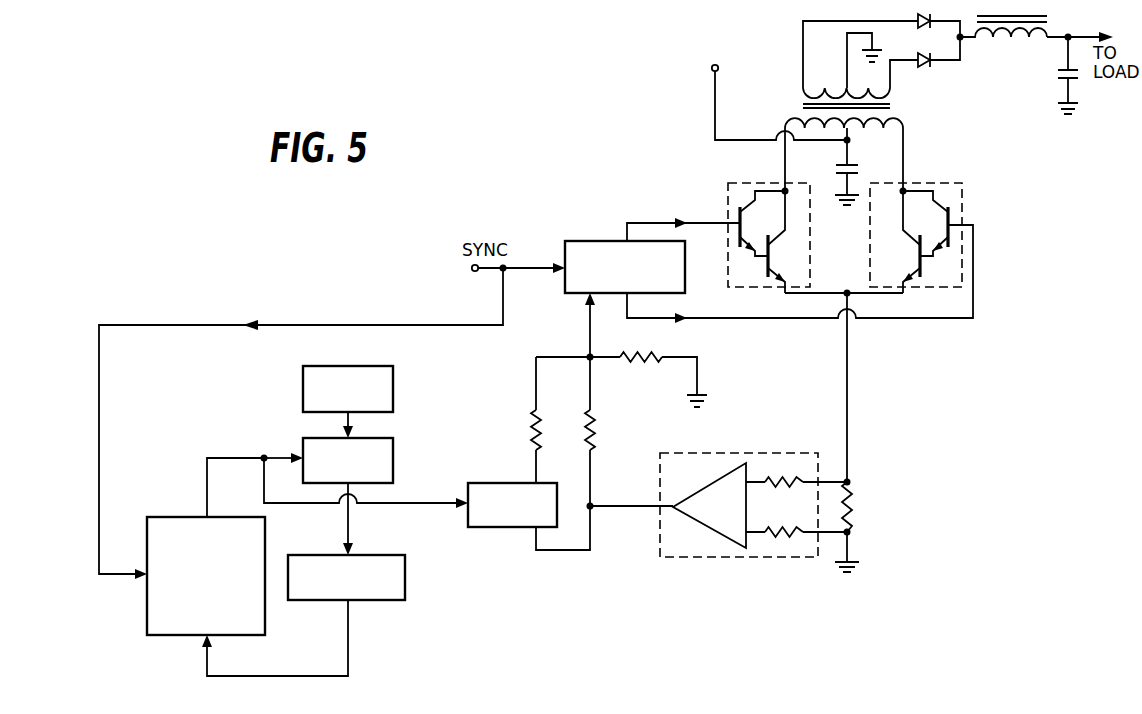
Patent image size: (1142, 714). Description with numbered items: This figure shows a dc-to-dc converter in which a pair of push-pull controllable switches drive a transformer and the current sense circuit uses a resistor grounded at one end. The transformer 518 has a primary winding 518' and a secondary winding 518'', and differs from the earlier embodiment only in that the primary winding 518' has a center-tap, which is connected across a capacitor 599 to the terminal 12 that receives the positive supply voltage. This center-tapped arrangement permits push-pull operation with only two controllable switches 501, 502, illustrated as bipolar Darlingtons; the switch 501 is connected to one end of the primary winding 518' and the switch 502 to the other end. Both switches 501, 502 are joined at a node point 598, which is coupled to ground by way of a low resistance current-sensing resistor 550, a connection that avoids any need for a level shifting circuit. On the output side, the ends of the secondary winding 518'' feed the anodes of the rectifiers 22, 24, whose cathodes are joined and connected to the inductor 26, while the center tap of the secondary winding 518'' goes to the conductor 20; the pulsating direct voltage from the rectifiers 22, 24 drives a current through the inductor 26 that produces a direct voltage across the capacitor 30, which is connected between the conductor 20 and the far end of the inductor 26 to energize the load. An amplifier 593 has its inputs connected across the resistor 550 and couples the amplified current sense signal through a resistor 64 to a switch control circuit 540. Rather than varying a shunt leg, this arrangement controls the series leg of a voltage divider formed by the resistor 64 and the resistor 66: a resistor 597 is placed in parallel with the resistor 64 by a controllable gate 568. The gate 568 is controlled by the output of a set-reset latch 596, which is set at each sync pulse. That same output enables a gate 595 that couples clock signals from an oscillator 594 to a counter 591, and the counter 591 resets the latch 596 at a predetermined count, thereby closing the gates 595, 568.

The terminal 12 is at (712, 69).
The conductor 20 is at (850, 32).
The semiconductor rectifier 22 is at (916, 18).
The semiconductor rectifier 24 is at (924, 66).
The inductor 26 is at (1024, 42).
The capacitor 30 is at (1055, 80).
The resistor 64 is at (594, 436).
The resistor 66 is at (645, 364).
The controllable switch 501 is at (727, 184).
The controllable switch 502 is at (963, 186).
The transformer 518 is at (813, 102).
The primary winding 518' is at (870, 130).
The secondary winding 518'' is at (814, 81).
The switch control circuit 540 is at (574, 240).
The current-sensing resistor 550 is at (851, 506).
The controllable gate 568 is at (483, 528).
The counter 591 is at (405, 598).
The amplifier 593 is at (736, 463).
The oscillator 594 is at (395, 387).
The gate 595 is at (395, 459).
The set-reset latch 596 is at (147, 636).
The resistor 597 is at (532, 428).
The node point 598 is at (850, 297).
The capacitor 599 is at (842, 156).